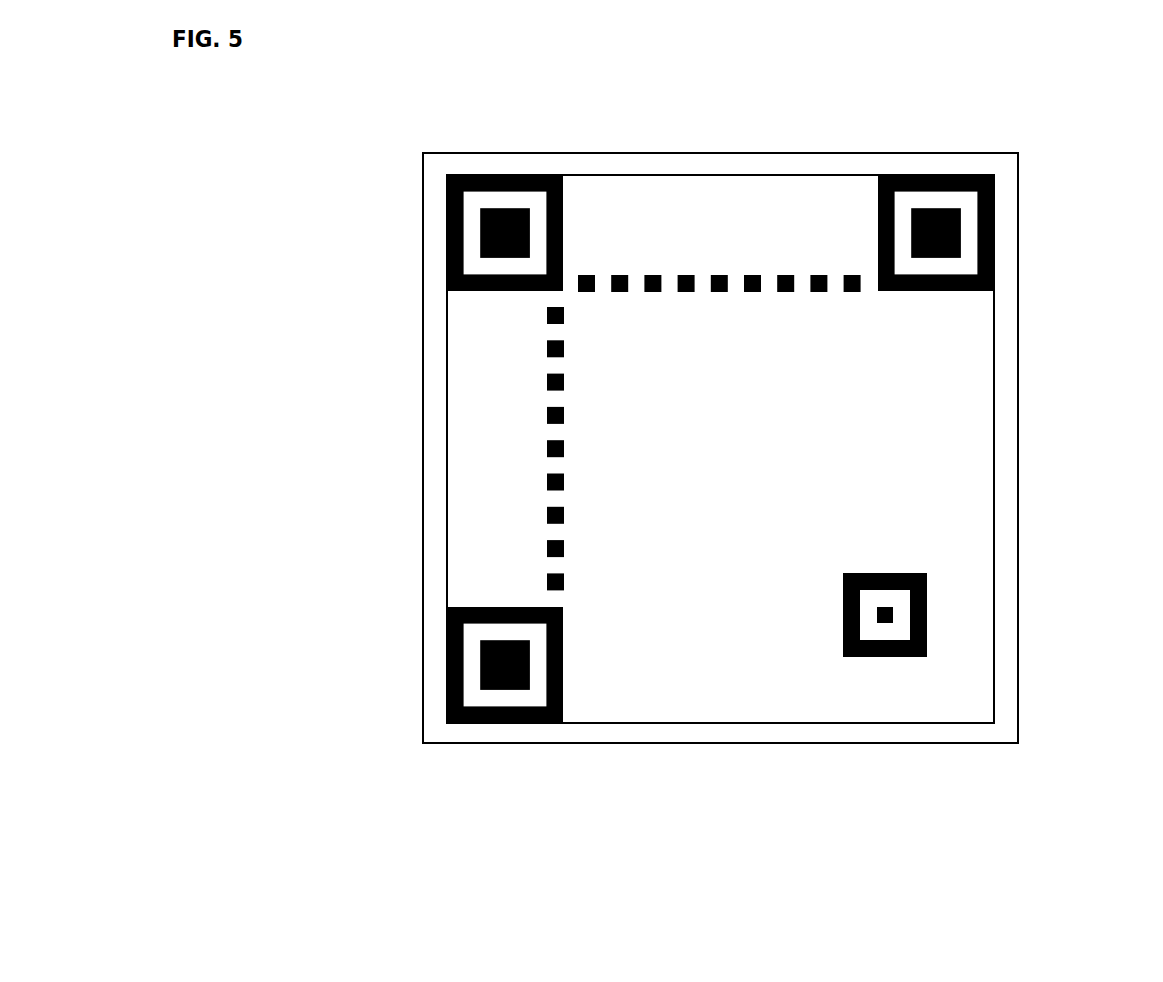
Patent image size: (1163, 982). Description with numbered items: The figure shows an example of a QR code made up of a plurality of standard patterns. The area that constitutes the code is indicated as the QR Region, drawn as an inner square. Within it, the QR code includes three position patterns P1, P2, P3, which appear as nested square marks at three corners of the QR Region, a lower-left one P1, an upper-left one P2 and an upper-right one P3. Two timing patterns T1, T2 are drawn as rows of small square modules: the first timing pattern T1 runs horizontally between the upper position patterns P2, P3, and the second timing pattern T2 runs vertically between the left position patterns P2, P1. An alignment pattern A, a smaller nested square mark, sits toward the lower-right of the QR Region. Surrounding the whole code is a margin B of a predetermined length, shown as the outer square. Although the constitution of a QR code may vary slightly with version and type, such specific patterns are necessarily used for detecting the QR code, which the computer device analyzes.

The position pattern P1 is at (569, 664).
The position pattern P2 is at (502, 175).
The position pattern P3 is at (940, 173).
The timing pattern T1 is at (688, 265).
The timing pattern T2 is at (568, 445).
The alignment pattern A is at (887, 565).
The margin B is at (1005, 695).
The QR region QR Region is at (995, 409).